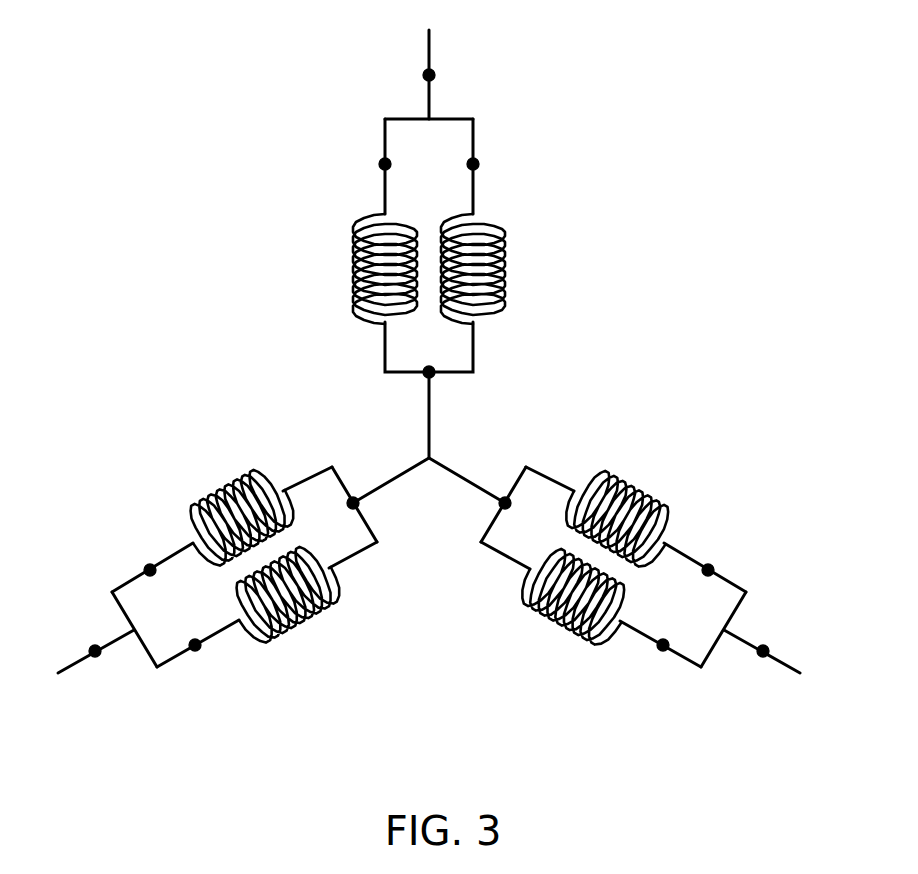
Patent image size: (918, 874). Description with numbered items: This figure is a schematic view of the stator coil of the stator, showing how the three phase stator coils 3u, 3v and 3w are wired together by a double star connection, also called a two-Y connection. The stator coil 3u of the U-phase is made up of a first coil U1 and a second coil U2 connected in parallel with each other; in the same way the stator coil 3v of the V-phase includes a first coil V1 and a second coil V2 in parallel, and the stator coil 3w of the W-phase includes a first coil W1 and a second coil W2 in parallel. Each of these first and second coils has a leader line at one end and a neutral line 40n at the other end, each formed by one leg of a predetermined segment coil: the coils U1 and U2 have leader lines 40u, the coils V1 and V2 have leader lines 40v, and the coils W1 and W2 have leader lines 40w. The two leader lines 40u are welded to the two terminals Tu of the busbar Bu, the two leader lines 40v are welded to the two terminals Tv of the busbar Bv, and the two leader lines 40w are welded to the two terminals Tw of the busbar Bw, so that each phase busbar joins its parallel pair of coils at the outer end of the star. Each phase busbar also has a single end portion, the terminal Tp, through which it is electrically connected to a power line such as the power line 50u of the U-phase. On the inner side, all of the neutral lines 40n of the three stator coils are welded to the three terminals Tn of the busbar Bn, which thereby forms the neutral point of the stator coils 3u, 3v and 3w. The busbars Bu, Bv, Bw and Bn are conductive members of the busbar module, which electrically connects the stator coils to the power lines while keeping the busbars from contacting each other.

The stator coil 3u is at (516, 247).
The stator coil 3v is at (195, 491).
The stator coil 3w is at (663, 491).
The first coil U1 is at (508, 276).
The second coil U2 is at (351, 276).
The first coil V1 is at (223, 494).
The second coil V2 is at (313, 617).
The first coil W1 is at (545, 617).
The second coil W2 is at (635, 494).
The leader line 40u is at (385, 214).
The leader line 40v is at (140, 559).
The leader line 40w is at (718, 559).
The neutral line 40n is at (385, 356).
The power line 50u is at (432, 48).
The busbar Bu is at (418, 110).
The busbar Bv is at (112, 630).
The busbar Bw is at (746, 630).
The busbar Bn is at (424, 452).
The terminal Tu is at (385, 132).
The terminal Tv is at (142, 568).
The terminal Tw is at (716, 568).
The terminal Tn is at (432, 398).
The end portion Tp is at (432, 87).